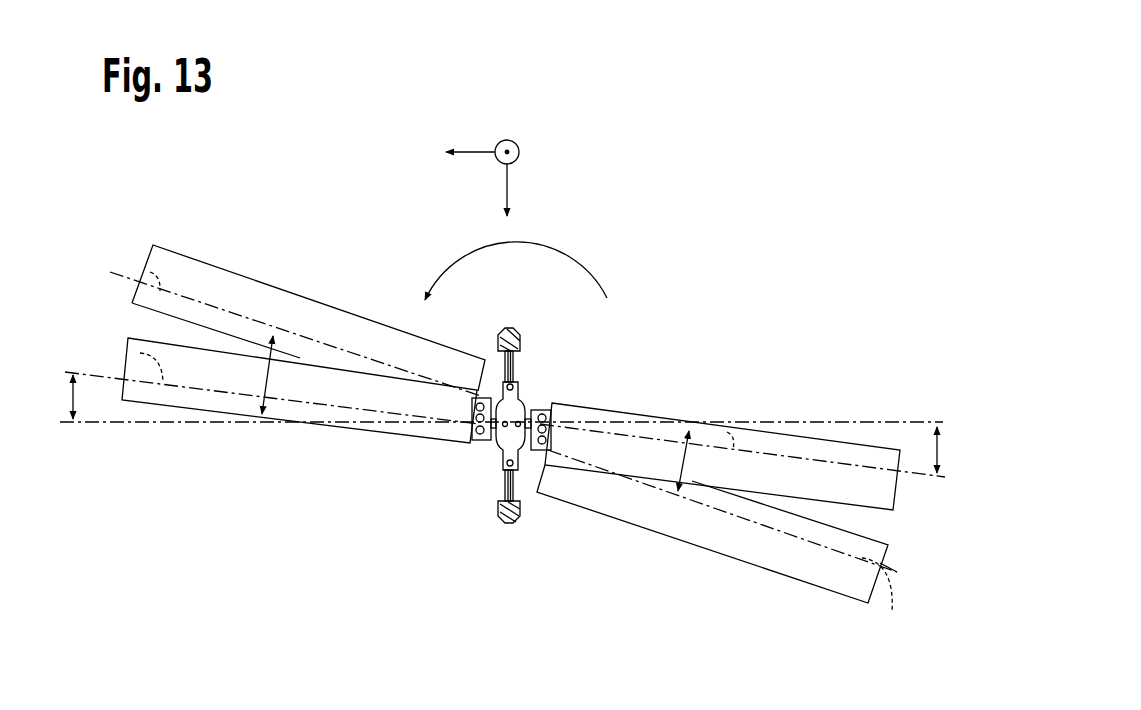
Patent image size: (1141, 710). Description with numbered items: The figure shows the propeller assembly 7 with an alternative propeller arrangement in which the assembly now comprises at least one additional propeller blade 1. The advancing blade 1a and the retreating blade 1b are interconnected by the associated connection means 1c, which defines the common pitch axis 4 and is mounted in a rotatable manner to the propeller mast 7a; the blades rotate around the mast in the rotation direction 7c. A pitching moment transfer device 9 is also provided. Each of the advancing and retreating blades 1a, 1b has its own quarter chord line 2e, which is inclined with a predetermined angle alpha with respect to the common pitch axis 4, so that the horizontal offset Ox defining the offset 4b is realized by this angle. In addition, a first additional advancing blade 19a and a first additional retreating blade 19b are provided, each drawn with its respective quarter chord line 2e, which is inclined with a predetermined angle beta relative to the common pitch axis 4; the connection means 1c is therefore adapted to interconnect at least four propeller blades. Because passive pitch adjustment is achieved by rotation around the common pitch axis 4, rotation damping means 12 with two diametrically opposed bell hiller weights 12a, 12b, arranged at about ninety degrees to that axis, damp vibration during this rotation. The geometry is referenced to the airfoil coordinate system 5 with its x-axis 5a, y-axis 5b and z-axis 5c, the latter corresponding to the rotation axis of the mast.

The propeller blade 1 is at (511, 410).
The advancing blade 1a is at (648, 427).
The retreating blade 1b is at (336, 432).
The connection means 1c is at (493, 445).
The quarter chord line 2e is at (140, 268).
The common pitch axis 4 is at (126, 424).
The offset 4b is at (265, 369).
The airfoil coordinate system 5 is at (556, 126).
The x-axis 5a is at (505, 187).
The y-axis 5b is at (468, 151).
The z-axis 5c is at (512, 156).
The propeller assembly 7 is at (529, 430).
The propeller mast 7a is at (530, 400).
The rotation direction 7c is at (586, 268).
The pitching moment transfer device 9 is at (478, 448).
The rotation damping means 12 is at (537, 460).
The bell hiller weight 12a is at (518, 343).
The bell hiller weight 12b is at (517, 509).
The first additional advancing blade 19a is at (640, 507).
The first additional retreating blade 19b is at (332, 318).